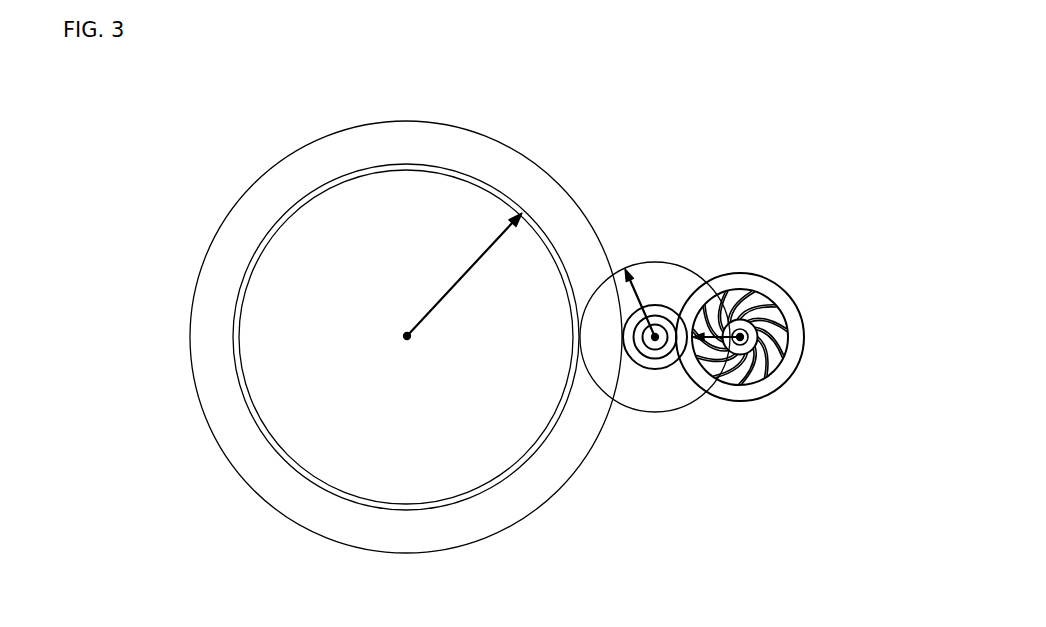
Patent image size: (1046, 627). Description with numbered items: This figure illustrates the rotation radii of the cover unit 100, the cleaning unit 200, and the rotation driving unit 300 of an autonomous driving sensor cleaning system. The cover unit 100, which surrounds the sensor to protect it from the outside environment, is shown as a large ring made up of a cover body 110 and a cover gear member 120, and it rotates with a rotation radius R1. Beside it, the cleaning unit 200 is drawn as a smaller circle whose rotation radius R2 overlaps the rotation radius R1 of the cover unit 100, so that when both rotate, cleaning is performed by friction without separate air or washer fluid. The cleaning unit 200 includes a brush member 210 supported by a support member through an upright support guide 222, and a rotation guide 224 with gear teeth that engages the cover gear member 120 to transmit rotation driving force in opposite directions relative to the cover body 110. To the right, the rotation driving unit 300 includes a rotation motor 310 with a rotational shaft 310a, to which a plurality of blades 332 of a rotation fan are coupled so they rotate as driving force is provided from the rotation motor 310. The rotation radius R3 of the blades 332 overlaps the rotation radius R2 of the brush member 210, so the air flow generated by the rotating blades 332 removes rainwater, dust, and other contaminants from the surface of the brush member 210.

The cover unit 100 is at (343, 337).
The cover body 110 is at (255, 298).
The cover gear member 120 is at (209, 351).
The rotation radius of the cover unit R1 is at (458, 281).
The cleaning unit 200 is at (657, 323).
The brush member 210 is at (625, 398).
The support guide 222 is at (660, 341).
The rotation guide 224 is at (650, 364).
The rotation radius of the cleaning unit R2 is at (656, 280).
The rotation driving unit 300 is at (809, 333).
The rotation motor 310 is at (792, 306).
The rotational shaft 310a is at (756, 386).
The blades 332 is at (762, 297).
The rotation radius of the blade R3 is at (734, 328).